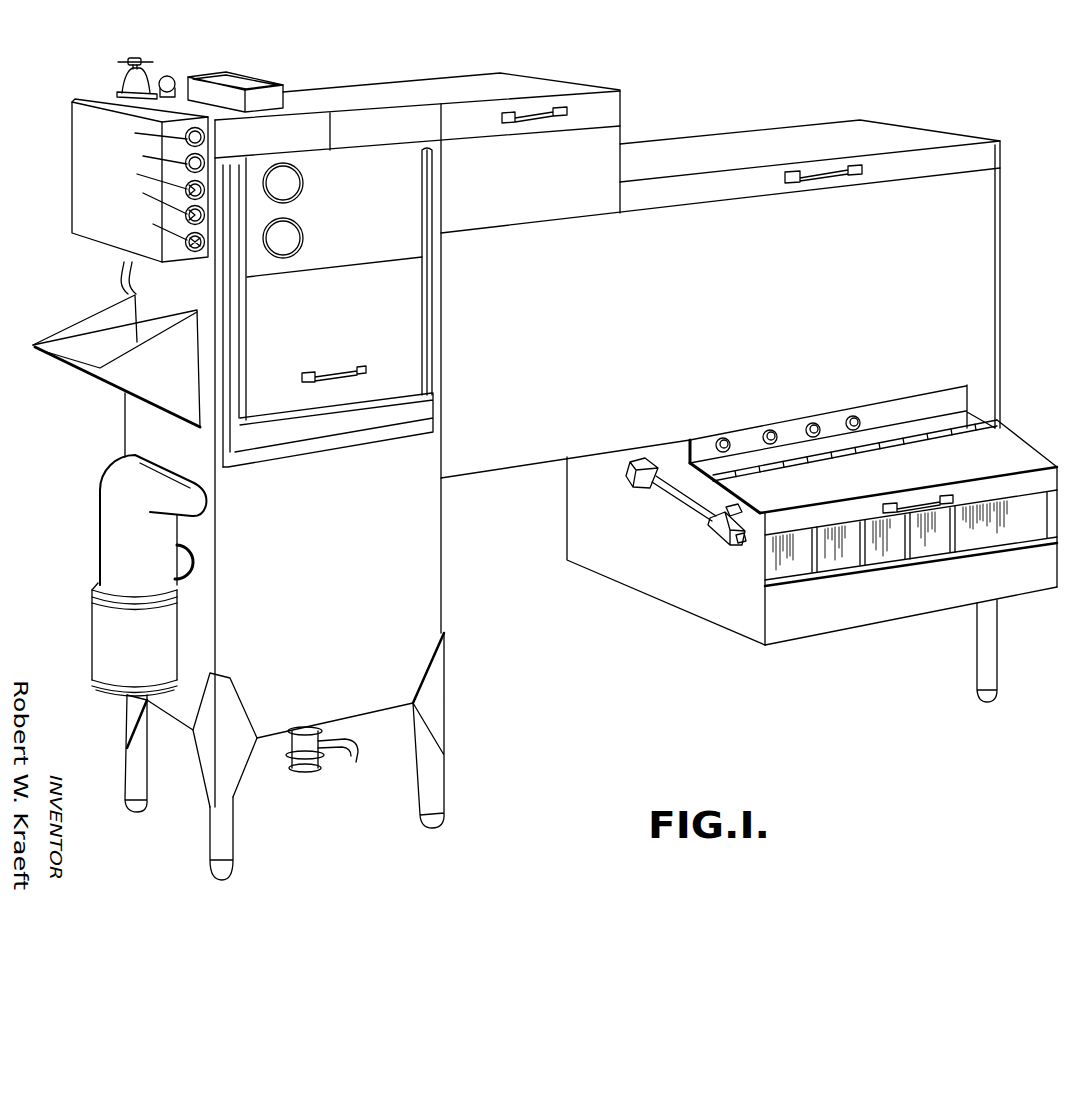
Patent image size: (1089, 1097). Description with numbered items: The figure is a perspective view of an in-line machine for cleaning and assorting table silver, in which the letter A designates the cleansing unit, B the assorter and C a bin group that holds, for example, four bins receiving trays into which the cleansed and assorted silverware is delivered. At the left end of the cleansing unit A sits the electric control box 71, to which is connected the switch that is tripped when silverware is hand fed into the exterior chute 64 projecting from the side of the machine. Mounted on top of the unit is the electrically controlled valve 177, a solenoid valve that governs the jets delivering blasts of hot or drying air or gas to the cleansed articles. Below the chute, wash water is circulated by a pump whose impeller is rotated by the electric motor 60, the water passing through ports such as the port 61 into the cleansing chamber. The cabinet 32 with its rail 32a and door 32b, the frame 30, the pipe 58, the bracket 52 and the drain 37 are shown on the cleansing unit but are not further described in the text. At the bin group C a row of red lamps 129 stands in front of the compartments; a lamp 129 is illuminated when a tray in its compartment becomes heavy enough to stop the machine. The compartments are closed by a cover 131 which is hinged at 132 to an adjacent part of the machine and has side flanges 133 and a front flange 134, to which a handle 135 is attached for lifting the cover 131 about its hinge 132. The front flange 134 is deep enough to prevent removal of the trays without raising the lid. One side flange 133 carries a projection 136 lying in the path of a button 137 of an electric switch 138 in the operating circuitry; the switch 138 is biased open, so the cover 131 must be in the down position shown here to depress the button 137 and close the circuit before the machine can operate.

The electric control box 71 is at (77, 177).
The electrically controlled valve 177 is at (152, 92).
The cleansing unit A is at (112, 258).
The exterior chute 64 is at (182, 372).
The port 61 is at (152, 493).
The pipe 58 is at (107, 542).
The bracket 52 is at (178, 563).
The electric motor 60 is at (107, 644).
The frame 30 is at (207, 632).
The cabinet 32 is at (350, 582).
The rail 32a is at (425, 220).
The door 32b is at (346, 336).
The drain 37 is at (310, 771).
The assorter B is at (787, 128).
The bin group C is at (660, 597).
The red lamp 129 is at (769, 430).
The cover 131 is at (1003, 460).
The hinge 132 is at (924, 447).
The side flange 133 is at (755, 515).
The front flange 134 is at (847, 512).
The handle 135 is at (923, 503).
The projection 136 is at (740, 512).
The button 137 is at (727, 532).
The electric switch 138 is at (742, 544).